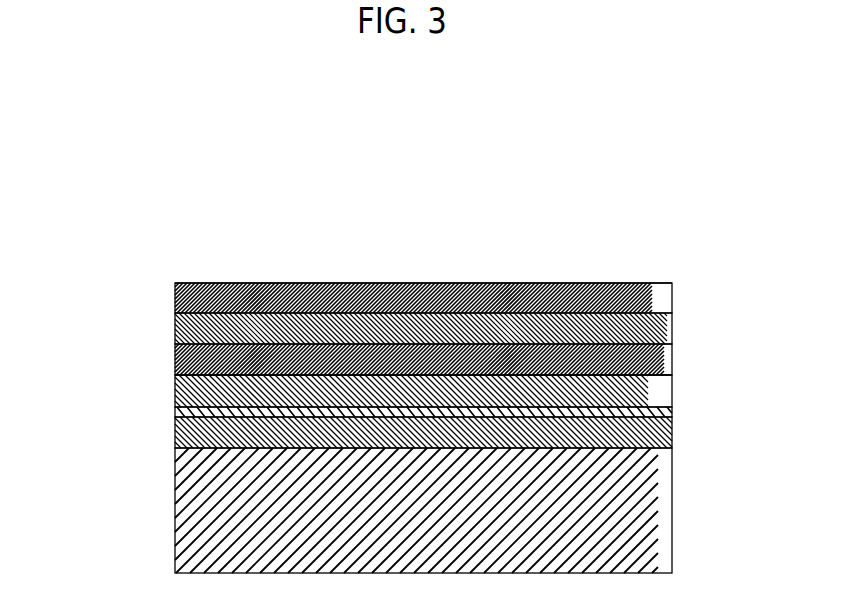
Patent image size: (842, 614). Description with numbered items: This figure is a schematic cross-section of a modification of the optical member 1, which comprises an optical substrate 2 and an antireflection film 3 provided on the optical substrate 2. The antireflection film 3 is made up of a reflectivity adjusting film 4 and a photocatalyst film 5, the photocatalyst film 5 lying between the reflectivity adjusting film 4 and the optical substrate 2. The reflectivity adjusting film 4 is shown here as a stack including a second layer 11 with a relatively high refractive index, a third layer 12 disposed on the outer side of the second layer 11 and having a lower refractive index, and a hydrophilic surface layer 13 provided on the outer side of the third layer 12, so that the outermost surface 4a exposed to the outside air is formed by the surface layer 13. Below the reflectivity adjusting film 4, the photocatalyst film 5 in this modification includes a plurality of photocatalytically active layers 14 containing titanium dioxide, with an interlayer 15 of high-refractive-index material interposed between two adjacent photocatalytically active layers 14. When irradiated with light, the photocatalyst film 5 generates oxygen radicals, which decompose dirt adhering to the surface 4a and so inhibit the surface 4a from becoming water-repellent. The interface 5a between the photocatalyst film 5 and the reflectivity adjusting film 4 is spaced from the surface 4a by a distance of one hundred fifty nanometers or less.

The optical member 1 is at (184, 91).
The optical substrate 2 is at (174, 518).
The antireflection film 3 is at (113, 283).
The reflectivity adjusting film 4 is at (168, 283).
The surface 4a is at (360, 283).
The photocatalyst film 5 is at (168, 377).
The interface 5a is at (483, 375).
The second layer 11 is at (673, 360).
The third layer 12 is at (673, 325).
The surface layer 13 is at (673, 283).
The photocatalytically active layer 14 is at (673, 390).
The interlayer 15 is at (673, 412).